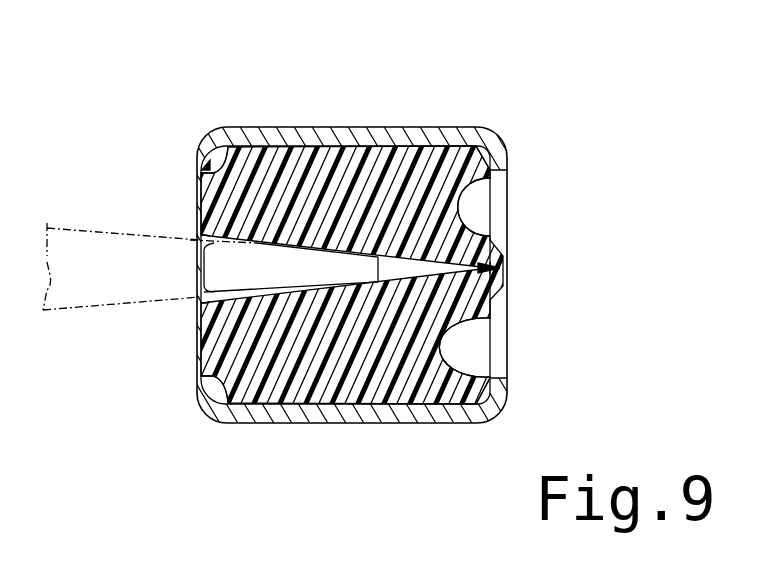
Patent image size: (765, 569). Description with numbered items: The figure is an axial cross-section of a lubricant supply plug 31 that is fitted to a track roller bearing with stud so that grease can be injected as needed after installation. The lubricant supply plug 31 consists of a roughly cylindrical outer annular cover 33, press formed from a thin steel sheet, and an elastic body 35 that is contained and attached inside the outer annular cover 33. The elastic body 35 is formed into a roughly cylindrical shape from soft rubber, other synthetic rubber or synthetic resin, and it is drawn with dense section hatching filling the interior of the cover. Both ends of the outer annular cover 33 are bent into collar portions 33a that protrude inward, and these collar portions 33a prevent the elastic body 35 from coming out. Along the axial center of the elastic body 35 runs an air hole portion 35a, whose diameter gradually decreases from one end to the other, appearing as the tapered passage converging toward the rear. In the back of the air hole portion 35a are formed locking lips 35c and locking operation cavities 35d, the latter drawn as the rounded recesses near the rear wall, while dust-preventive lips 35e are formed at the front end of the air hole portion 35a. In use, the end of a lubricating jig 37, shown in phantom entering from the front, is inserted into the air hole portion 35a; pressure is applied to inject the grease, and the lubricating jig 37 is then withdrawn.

The lubricant supply plug 31 is at (347, 218).
The outer annular cover 33 is at (362, 127).
The collar portions 33a is at (200, 160).
The elastic body 35 is at (290, 182).
The air hole portion 35a is at (405, 267).
The locking lips 35c is at (490, 287).
The locking operation cavities 35d is at (470, 217).
The dust-preventive lips 35e is at (200, 297).
The lubricating jig 37 is at (76, 243).